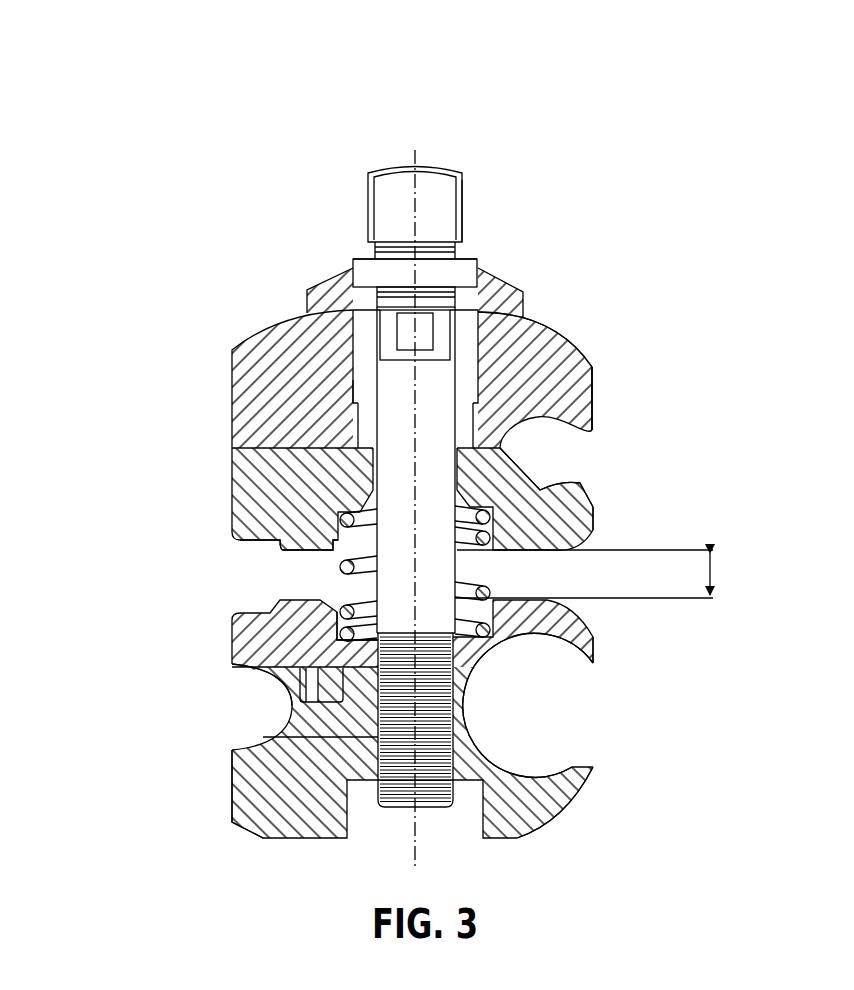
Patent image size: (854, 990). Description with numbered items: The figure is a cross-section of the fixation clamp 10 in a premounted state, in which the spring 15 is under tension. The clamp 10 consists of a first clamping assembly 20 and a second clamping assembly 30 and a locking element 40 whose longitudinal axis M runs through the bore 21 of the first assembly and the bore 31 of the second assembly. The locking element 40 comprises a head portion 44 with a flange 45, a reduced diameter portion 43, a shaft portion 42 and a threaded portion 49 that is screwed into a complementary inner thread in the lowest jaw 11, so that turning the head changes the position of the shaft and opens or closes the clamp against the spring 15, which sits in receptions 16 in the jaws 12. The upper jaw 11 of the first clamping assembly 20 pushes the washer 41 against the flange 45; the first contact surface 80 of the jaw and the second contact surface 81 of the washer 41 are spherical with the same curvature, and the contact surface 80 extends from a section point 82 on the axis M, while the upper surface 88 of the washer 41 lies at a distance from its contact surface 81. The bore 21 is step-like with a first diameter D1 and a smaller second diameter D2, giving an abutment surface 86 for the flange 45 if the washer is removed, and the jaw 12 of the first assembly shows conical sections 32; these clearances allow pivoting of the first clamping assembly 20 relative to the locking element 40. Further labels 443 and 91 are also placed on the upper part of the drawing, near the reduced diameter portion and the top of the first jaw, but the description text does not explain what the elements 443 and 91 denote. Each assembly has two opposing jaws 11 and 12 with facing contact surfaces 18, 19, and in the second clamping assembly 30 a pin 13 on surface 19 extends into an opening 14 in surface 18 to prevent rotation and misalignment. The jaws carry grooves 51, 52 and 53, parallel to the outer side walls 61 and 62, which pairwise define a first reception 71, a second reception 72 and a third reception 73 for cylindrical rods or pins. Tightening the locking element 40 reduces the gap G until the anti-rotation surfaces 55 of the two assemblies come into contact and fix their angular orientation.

The fixation clamp 10 is at (478, 100).
The longitudinal axis M is at (415, 155).
The locking element 40 is at (475, 182).
The head portion 44 is at (452, 178).
The flange 45 is at (475, 262).
The washer 41 is at (476, 272).
The upper surface 88 is at (347, 258).
The second contact surface 81 is at (357, 283).
The section point 82 is at (415, 303).
The reduced diameter portion 43 is at (446, 330).
The drive recess 443 is at (392, 327).
The first clamping assembly 20 is at (596, 383).
The first contact surface 80 is at (297, 320).
The right boss 91 is at (518, 283).
The jaw 11 is at (588, 365).
The groove 51 is at (553, 333).
The first diameter D1 is at (490, 365).
The outer side wall 61 is at (596, 412).
The third reception 73 is at (540, 450).
The groove 53 is at (540, 467).
The jaw 12 is at (550, 488).
The contact surface 18 is at (232, 448).
The contact surface 19 is at (292, 697).
The shaft portion 42 is at (392, 460).
The conical section 32 is at (353, 490).
The anti-rotation surface 55 is at (520, 560).
The gap G is at (721, 574).
The bore 21 is at (363, 352).
The abutment surface 86 is at (355, 390).
The second diameter D2 is at (355, 422).
The reception 16 is at (345, 548).
The spring 15 is at (345, 568).
The second clamping assembly 30 is at (585, 632).
The bore 31 is at (340, 636).
The first reception 71 is at (530, 703).
The outer side wall 62 is at (258, 785).
The opening 14 is at (360, 657).
The second reception 72 is at (267, 695).
The pin 13 is at (295, 707).
The threaded portion 49 is at (265, 738).
The groove 52 is at (235, 742).